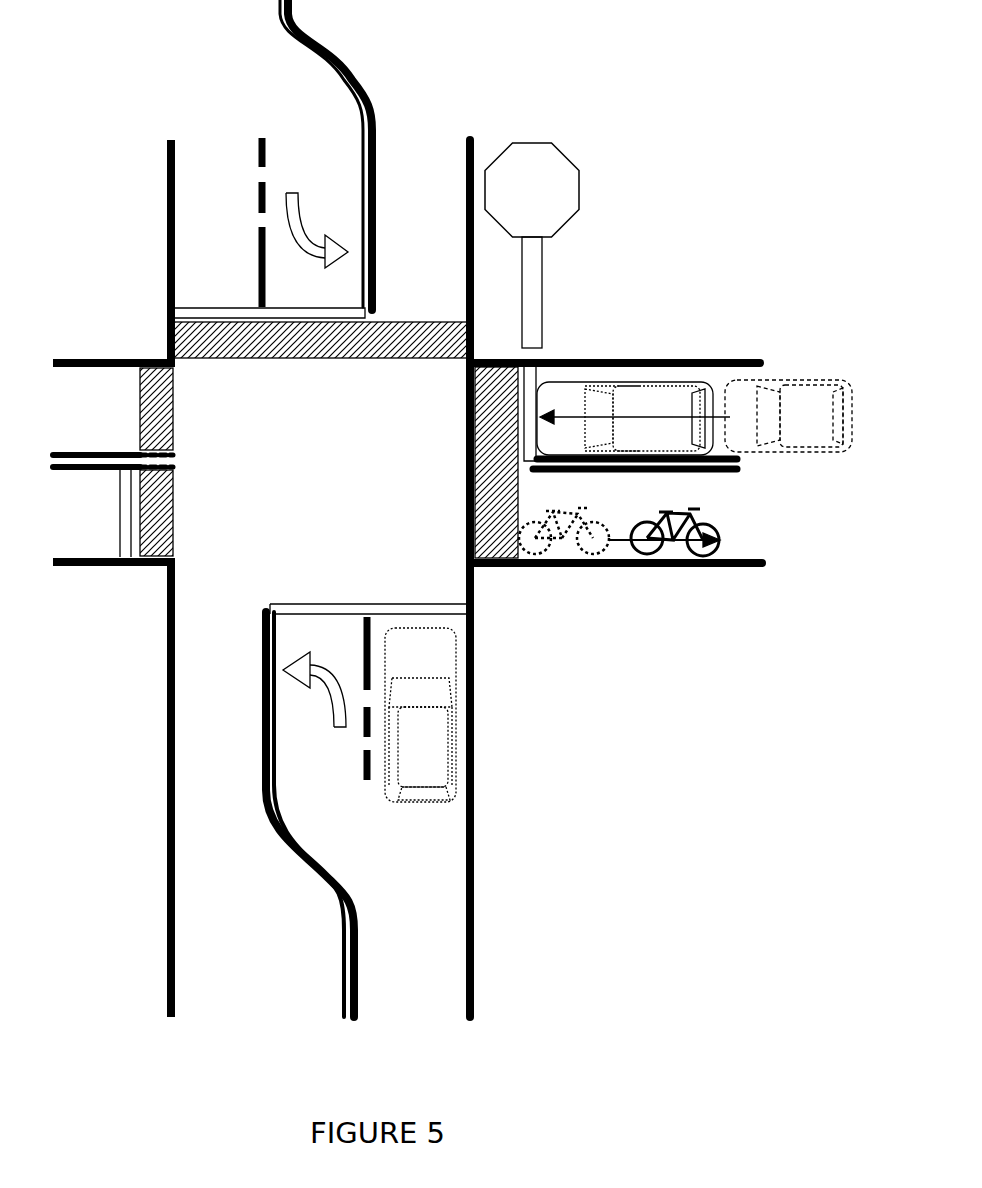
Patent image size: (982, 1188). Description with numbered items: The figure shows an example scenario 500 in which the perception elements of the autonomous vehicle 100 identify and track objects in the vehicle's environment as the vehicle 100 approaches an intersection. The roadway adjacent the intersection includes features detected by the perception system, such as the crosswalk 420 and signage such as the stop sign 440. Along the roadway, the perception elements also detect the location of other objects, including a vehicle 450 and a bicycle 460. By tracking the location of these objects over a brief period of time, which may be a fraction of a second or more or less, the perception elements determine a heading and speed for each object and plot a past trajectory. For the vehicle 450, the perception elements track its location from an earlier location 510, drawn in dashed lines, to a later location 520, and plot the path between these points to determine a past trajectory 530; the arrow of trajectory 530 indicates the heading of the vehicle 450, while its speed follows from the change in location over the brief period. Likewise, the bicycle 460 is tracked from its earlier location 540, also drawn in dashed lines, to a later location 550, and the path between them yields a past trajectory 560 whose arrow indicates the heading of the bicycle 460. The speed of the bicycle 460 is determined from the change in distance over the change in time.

The example scenario 500 is at (82, 117).
The crosswalk 420 is at (197, 320).
The stop sign 440 is at (583, 188).
The vehicle 450 is at (577, 380).
The location 520 is at (664, 376).
The location 510 is at (791, 374).
The past trajectory 530 is at (537, 417).
The location 540 is at (555, 537).
The bicycle 460 is at (677, 540).
The past trajectory 560 is at (730, 542).
The location 550 is at (627, 538).
The vehicle 100 is at (462, 715).